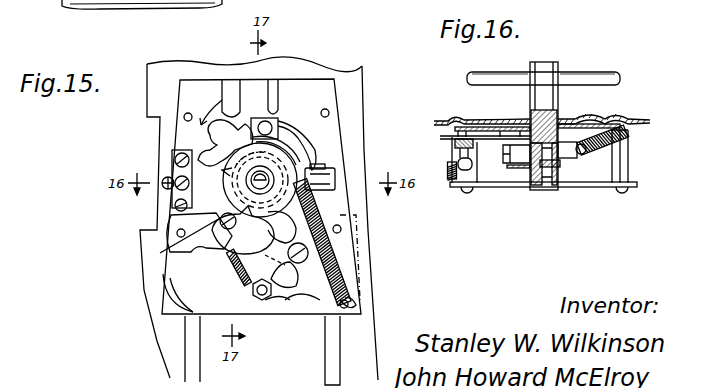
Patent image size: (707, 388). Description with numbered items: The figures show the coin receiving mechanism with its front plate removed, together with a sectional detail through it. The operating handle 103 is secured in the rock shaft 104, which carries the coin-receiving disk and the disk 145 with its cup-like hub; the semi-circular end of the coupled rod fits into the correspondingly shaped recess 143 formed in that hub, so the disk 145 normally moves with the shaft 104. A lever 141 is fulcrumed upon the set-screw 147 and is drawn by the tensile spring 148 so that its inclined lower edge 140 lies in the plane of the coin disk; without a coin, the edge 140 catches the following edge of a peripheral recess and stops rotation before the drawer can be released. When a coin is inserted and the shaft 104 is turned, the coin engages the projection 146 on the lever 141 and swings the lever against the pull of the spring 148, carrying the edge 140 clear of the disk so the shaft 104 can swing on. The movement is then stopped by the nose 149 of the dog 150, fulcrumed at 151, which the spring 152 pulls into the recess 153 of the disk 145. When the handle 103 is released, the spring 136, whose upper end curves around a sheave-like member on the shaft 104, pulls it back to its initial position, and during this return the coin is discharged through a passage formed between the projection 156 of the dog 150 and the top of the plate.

In FIG. 16, the operating handle 103 is at (547, 63).
In FIG. 16, the rock shaft 104 is at (559, 97).
In FIG. 15, the spring 136 is at (355, 287).
In FIG. 16, the spring 136 is at (617, 146).
In FIG. 15, the inclined lower edge 140 is at (333, 177).
In FIG. 15, the lever 141 is at (227, 130).
In FIG. 16, the lever 141 is at (493, 137).
In FIG. 15, the recess 143 is at (170, 222).
In FIG. 15, the disk 145 is at (335, 197).
In FIG. 15, the projection 146 is at (170, 157).
In FIG. 16, the projection 146 is at (507, 128).
In FIG. 16, the set-screw 147 is at (452, 142).
In FIG. 16, the tensile spring 148 is at (448, 180).
In FIG. 15, the nose 149 is at (342, 239).
In FIG. 15, the dog 150 is at (260, 234).
In FIG. 15, the fulcrum 151 is at (160, 254).
In FIG. 15, the spring 152 is at (236, 274).
In FIG. 15, the recess 153 is at (193, 145).
In FIG. 15, the projection 156 is at (224, 252).